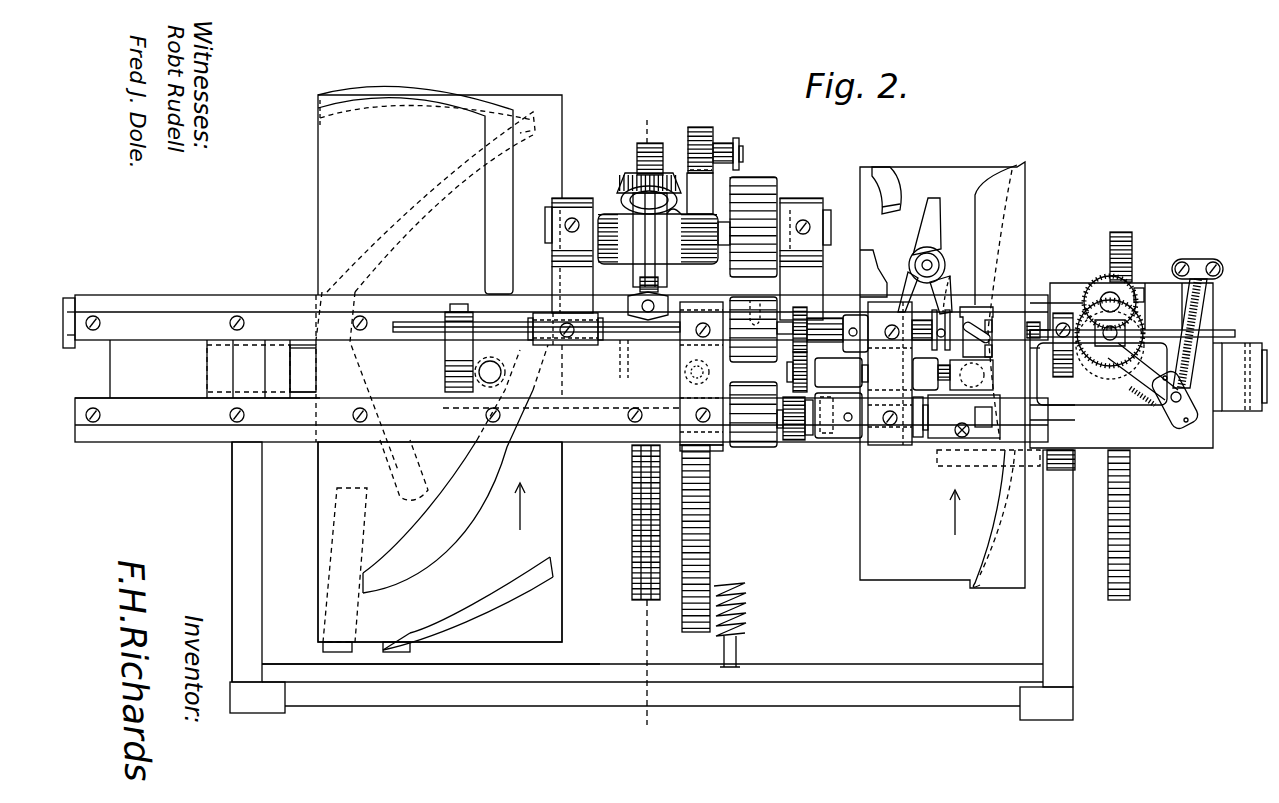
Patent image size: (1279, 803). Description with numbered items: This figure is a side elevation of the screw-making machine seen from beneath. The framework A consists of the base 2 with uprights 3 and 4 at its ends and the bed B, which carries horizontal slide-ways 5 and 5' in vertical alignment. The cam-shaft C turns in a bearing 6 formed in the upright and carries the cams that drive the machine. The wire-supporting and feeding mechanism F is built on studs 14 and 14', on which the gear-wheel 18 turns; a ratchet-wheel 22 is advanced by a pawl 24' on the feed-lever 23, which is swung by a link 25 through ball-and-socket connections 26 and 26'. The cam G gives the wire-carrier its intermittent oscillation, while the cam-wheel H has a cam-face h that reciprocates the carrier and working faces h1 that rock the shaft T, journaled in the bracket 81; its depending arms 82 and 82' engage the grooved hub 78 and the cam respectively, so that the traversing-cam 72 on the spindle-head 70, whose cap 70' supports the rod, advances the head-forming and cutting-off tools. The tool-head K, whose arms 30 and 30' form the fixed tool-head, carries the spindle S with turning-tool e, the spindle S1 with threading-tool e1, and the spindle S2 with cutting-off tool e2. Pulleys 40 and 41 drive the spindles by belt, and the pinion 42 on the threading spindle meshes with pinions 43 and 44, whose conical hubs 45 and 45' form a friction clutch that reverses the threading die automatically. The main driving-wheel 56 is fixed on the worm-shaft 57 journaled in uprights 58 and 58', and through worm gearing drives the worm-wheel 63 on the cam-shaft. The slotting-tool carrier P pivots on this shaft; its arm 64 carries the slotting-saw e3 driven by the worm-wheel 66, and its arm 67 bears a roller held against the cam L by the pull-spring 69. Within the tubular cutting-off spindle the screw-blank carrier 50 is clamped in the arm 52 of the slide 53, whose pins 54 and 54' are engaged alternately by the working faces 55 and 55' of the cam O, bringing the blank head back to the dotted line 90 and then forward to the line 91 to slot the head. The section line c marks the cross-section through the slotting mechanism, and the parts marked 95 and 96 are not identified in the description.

The framework A is at (651, 581).
The base 2 is at (880, 680).
The upright 3 is at (255, 549).
The upright 4 is at (1068, 623).
The slide-way 5 is at (561, 368).
The slide-way 5' is at (197, 384).
The bearing 6 is at (261, 369).
The cam-shaft C is at (303, 392).
The end cap 96 is at (72, 308).
The cam O is at (440, 542).
The working-face of cam 55 is at (455, 469).
The working-face of cam 55' is at (468, 603).
The shaft 95 is at (410, 322).
The laterally projecting arm 52 is at (445, 356).
The lug or pin 54 is at (502, 376).
The lug or pin 54' is at (677, 377).
The screw-blank carrier 50 is at (522, 336).
The slide 53 is at (578, 388).
The dotted lines 90 is at (620, 362).
The dotted line 91 is at (630, 362).
The upright 58 is at (569, 240).
The upright 58' is at (803, 243).
The horizontal worm-shaft 57 is at (830, 215).
The section line c— c is at (644, 421).
The worm-wheel 63 is at (657, 148).
The worm-wheel 66 is at (630, 180).
The slotting-tool carrier P is at (658, 240).
The outwardly-extending arm 64 is at (682, 230).
The slotting-saw e3 is at (630, 302).
The laterally projecting arm 67 is at (703, 135).
The pull-spring 69 is at (740, 170).
The main driving-wheel 56 is at (747, 227).
The driving pulley 41 is at (740, 305).
The driving pulley 40 is at (752, 448).
The pinion 44 is at (800, 312).
The conical hub 45' is at (813, 300).
The pinion 42 is at (790, 370).
The pinion 43 is at (795, 442).
The conical hub 45 is at (820, 437).
The arm of tool-head 30 is at (787, 386).
The arm of tool-head 30' is at (711, 470).
The cam L is at (710, 530).
The tool-carrying spindle S2 is at (846, 315).
The tool-carrying spindle S1 is at (841, 372).
The tool-carrying spindle S is at (923, 440).
The tool-head K is at (890, 373).
The grooved hub or collar 78 is at (931, 355).
The threading-tool e1 is at (993, 375).
The turning tool e is at (992, 420).
The cutting-off tool e2 is at (993, 320).
The bracket 81 is at (943, 292).
The spindle-head 70 is at (1008, 304).
The traversing-cam 72 is at (993, 330).
The cap 70' is at (1009, 350).
The cam-wheel H is at (942, 375).
The cam-face h is at (978, 192).
The working faces h1 is at (925, 222).
The rock-shaft T is at (931, 258).
The depending arm 82 is at (971, 279).
The depending arm 82' is at (899, 282).
The bed B is at (1121, 376).
The ratchet-wheel 22 is at (1086, 366).
The cam G is at (1121, 244).
The gear-wheel 18 is at (1104, 292).
The stud 14 is at (1141, 275).
The stud 14' is at (1128, 333).
The wire-supporting and feeding mechanism F is at (1143, 371).
The feed-lever 23 is at (1108, 378).
The pawl 24' is at (1127, 411).
The link 25 is at (1205, 322).
The ball-and-socket connection 26' is at (1197, 255).
The ball-and-socket connection 26 is at (1175, 361).